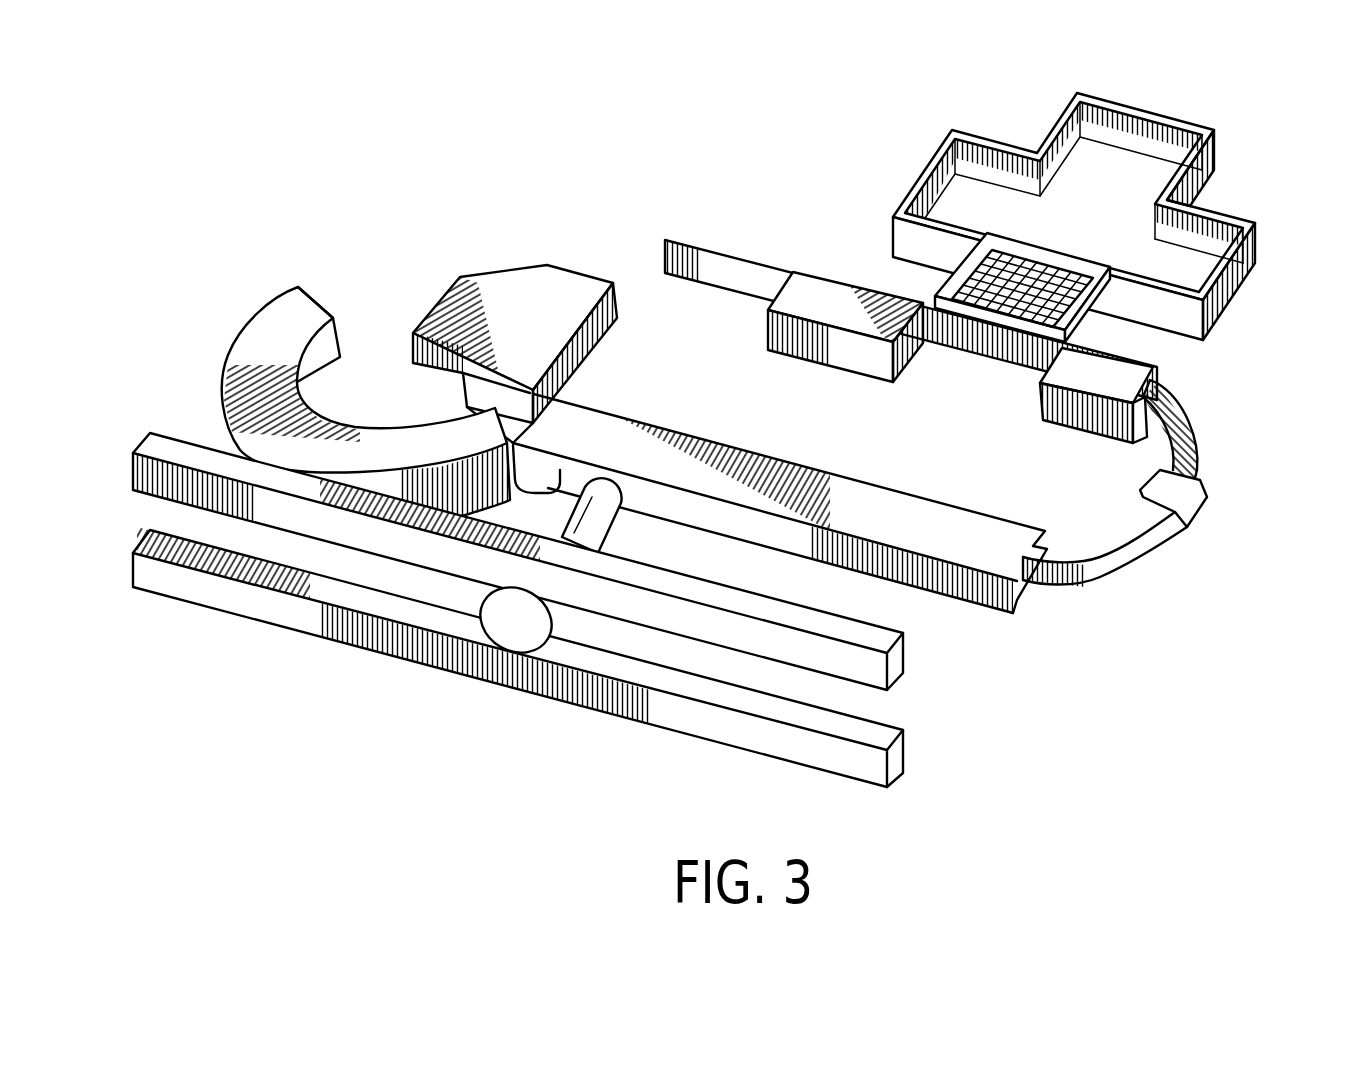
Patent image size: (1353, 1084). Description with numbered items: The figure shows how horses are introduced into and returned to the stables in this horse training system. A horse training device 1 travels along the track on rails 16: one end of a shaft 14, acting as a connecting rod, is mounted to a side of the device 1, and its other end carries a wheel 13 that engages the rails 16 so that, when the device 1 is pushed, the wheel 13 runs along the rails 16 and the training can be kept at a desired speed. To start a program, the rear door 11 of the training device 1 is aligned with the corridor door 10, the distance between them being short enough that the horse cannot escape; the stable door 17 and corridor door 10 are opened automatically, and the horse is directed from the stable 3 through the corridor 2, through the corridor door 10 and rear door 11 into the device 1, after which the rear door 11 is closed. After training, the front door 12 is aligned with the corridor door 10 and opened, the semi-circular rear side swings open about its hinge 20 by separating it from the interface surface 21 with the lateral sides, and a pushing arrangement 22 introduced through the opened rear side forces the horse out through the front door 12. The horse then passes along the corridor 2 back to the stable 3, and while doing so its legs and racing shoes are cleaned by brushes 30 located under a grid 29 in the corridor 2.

The horse training device 1 is at (1200, 450).
The corridor 2 is at (1097, 310).
The stable 3 is at (1203, 158).
The corridor door 10 is at (950, 297).
The rear door 11 is at (753, 280).
The front door 12 is at (1020, 352).
The wheel 13 is at (513, 620).
The shaft 14 is at (603, 523).
The rails 16 is at (893, 660).
The stable door 17 is at (1033, 260).
The hinge 20 is at (560, 485).
The interface surface 21 is at (813, 297).
The pushing arrangement 22 is at (500, 307).
The grid 29 is at (1003, 287).
The brushes 30 is at (1052, 280).